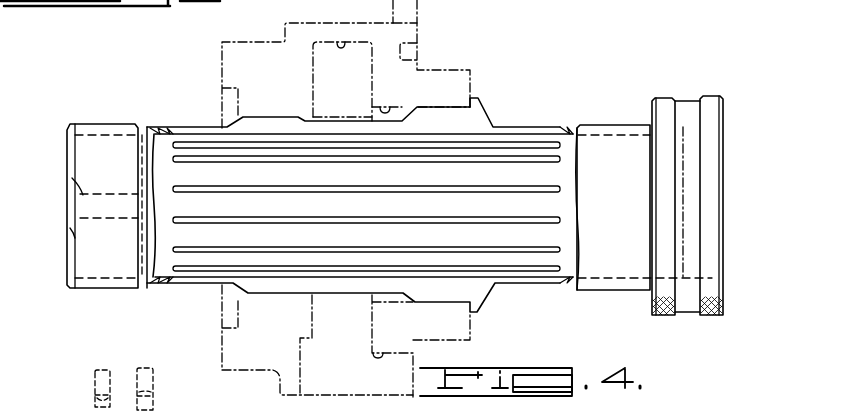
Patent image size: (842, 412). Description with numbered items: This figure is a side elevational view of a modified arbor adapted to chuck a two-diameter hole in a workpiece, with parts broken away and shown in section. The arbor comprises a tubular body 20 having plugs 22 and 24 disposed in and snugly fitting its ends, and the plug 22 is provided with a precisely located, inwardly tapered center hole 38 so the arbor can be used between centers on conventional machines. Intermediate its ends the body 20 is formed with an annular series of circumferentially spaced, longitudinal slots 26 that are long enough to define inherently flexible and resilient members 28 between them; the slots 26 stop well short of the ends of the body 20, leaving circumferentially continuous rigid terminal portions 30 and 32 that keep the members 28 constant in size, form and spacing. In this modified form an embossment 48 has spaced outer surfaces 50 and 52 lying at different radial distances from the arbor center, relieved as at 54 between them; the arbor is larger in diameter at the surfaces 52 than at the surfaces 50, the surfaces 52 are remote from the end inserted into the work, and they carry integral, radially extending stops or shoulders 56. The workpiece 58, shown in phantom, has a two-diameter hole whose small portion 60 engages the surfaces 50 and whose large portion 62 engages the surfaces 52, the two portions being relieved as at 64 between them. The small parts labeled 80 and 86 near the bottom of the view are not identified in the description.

The tubular body 20 is at (614, 114).
The plug 22 is at (70, 152).
The plug 24 is at (728, 140).
The longitudinal slots 26 is at (503, 160).
The flexible and resilient members 28 is at (568, 123).
The rigid terminal portion 30 is at (164, 128).
The rigid terminal portion 32 is at (570, 286).
The center hole 38 is at (73, 204).
The embossment 48 is at (497, 148).
The outer surfaces 50 is at (297, 115).
The outer surfaces 52 is at (437, 107).
The relief 54 is at (335, 117).
The stops or shoulders 56 is at (477, 117).
The workpiece 58 is at (402, 23).
The small portion 60 is at (257, 110).
The large portion 62 is at (398, 88).
The relief 64 is at (357, 4).
The bracket 80 is at (227, 410).
The fasteners 86 is at (147, 390).